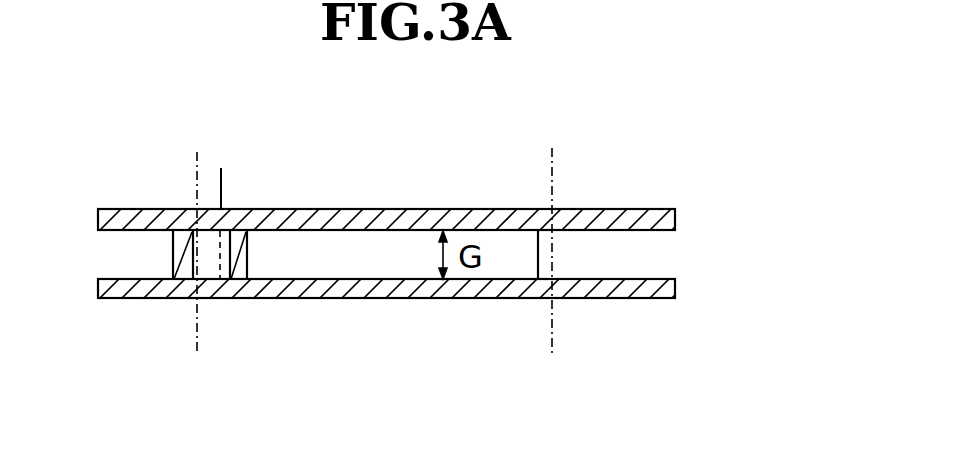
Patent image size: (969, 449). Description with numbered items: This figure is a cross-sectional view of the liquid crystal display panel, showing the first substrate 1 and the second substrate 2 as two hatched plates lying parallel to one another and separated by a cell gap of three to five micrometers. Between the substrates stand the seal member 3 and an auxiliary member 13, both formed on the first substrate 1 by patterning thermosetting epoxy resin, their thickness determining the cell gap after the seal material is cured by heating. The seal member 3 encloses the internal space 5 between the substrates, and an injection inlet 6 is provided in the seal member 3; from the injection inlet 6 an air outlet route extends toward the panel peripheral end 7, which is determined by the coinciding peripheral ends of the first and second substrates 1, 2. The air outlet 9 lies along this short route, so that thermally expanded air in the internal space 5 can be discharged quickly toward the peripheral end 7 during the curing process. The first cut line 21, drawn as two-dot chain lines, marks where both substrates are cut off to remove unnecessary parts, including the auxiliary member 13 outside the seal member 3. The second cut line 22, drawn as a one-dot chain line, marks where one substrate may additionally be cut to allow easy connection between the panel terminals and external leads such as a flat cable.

The first substrate 1 is at (377, 299).
The second substrate 2 is at (385, 209).
The seal member 3 is at (215, 299).
The internal space 5 is at (290, 252).
The injection inlet 6 is at (543, 252).
The panel peripheral end 7 is at (675, 252).
The air outlet 9 is at (617, 252).
The auxiliary member 13 is at (160, 298).
The first cut line 21 is at (196, 168).
The second cut line 22 is at (222, 186).